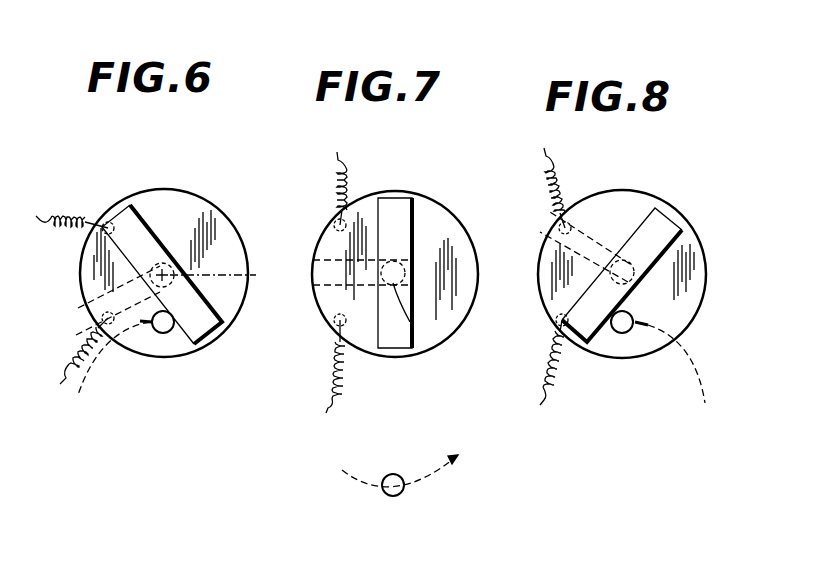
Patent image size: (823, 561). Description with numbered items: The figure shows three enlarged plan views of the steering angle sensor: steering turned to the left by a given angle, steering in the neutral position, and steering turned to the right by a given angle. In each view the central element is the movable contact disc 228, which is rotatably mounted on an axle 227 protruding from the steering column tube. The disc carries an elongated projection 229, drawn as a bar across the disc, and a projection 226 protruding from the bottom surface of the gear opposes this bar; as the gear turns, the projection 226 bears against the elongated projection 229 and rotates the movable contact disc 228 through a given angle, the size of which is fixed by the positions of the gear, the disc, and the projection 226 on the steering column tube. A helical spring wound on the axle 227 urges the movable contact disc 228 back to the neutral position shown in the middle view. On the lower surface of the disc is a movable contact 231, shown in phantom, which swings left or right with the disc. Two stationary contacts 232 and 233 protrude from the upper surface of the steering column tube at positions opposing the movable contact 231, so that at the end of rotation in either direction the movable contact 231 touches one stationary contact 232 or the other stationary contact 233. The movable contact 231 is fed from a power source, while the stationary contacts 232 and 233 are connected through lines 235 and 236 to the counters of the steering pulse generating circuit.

In FIG. 6, the projection 226 is at (165, 333).
In FIG. 7, the projection 226 is at (396, 482).
In FIG. 8, the projection 226 is at (620, 333).
In FIG. 6, the axle 227 is at (250, 275).
In FIG. 7, the axle 227 is at (412, 327).
In FIG. 8, the axle 227 is at (622, 272).
In FIG. 6, the movable contact disc 228 is at (200, 216).
In FIG. 7, the movable contact disc 228 is at (452, 306).
In FIG. 8, the movable contact disc 228 is at (688, 300).
In FIG. 6, the elongated projection 229 is at (203, 318).
In FIG. 7, the elongated projection 229 is at (398, 222).
In FIG. 8, the elongated projection 229 is at (663, 237).
In FIG. 6, the movable contact 231 is at (101, 300).
In FIG. 7, the movable contact 231 is at (318, 256).
In FIG. 8, the movable contact 231 is at (560, 246).
In FIG. 6, the stationary contact 232 is at (104, 220).
In FIG. 7, the stationary contact 232 is at (337, 219).
In FIG. 8, the stationary contact 232 is at (560, 222).
In FIG. 6, the stationary contact 233 is at (71, 339).
In FIG. 7, the stationary contact 233 is at (313, 356).
In FIG. 8, the stationary contact 233 is at (553, 353).
In FIG. 6, the line 235 is at (72, 214).
In FIG. 7, the line 235 is at (344, 160).
In FIG. 8, the line 235 is at (550, 156).
In FIG. 6, the line 236 is at (68, 380).
In FIG. 7, the line 236 is at (330, 404).
In FIG. 8, the line 236 is at (547, 402).